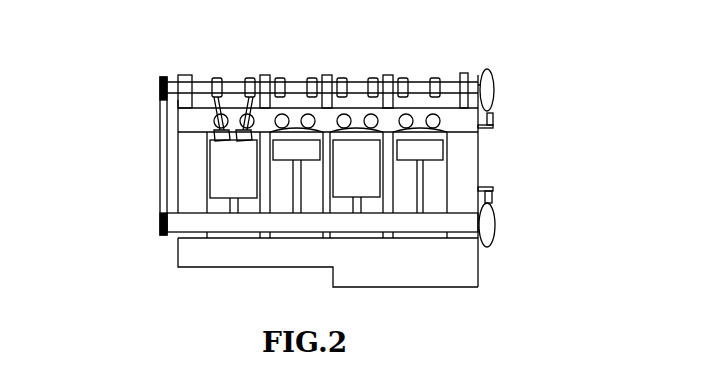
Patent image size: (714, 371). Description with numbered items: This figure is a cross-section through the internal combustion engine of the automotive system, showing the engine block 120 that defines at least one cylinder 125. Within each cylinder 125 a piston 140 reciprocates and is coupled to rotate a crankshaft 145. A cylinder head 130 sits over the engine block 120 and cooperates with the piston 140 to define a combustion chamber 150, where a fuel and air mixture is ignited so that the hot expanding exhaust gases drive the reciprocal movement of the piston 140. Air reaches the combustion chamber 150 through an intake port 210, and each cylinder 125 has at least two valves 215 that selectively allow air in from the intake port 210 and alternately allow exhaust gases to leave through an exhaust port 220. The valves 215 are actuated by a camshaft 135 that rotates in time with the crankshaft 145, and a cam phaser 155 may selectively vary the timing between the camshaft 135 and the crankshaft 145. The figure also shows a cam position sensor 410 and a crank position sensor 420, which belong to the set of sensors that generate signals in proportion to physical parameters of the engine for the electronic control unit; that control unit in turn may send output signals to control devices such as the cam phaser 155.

The engine block 120 is at (177, 174).
The cylinder 125 is at (334, 160).
The cylinder head 130 is at (180, 128).
The camshaft 135 is at (230, 82).
The piston 140 is at (358, 185).
The crankshaft 145 is at (178, 252).
The combustion chamber 150 is at (420, 133).
The cam phaser 155 is at (158, 85).
The intake port 210 is at (348, 115).
The valves 215 is at (214, 124).
The exhaust port 220 is at (303, 114).
The cam position sensor 410 is at (495, 125).
The crank position sensor 420 is at (492, 194).